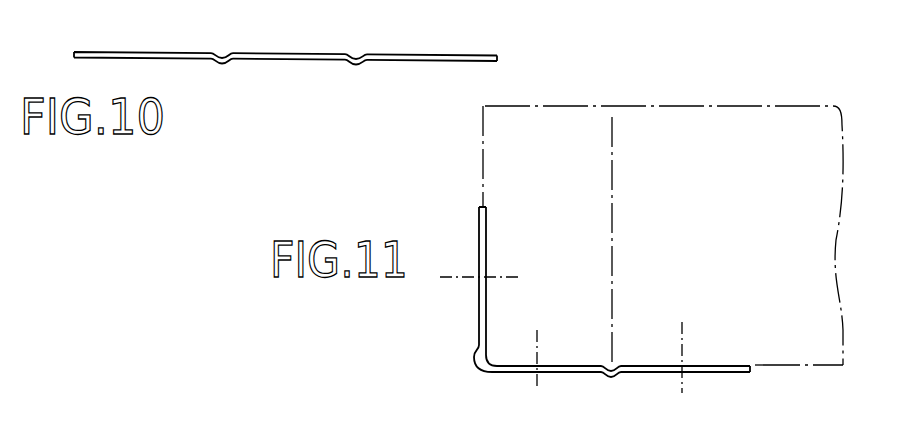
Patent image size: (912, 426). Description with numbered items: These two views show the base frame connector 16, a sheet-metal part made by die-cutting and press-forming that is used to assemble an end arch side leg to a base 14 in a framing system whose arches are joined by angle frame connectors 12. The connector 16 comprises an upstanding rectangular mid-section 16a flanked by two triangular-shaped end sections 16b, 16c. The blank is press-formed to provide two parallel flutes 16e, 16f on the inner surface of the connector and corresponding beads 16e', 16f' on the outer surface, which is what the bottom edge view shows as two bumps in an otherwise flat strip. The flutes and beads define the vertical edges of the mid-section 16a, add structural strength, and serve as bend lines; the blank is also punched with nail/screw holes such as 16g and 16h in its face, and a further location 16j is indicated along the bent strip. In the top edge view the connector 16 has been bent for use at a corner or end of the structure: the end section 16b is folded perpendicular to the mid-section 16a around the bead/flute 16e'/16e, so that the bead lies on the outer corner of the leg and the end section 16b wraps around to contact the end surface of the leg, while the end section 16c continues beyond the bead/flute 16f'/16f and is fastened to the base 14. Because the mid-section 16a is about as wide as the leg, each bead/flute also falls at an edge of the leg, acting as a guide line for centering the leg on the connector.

In FIG. 11, the angle frame connector 12 is at (552, 115).
In FIG. 11, the base 14 is at (752, 106).
In FIG. 10, the base frame connector 16 is at (304, 69).
In FIG. 11, the base frame connector 16 is at (447, 238).
In FIG. 10, the mid-section 16a is at (297, 53).
In FIG. 11, the mid-section 16a is at (489, 372).
In FIG. 10, the end section 16b is at (128, 52).
In FIG. 11, the end section 16b is at (478, 225).
In FIG. 10, the end section 16c is at (473, 56).
In FIG. 11, the end section 16c is at (741, 373).
In FIG. 10, the flute 16e is at (231, 35).
In FIG. 11, the flute 16e is at (508, 336).
In FIG. 10, the bead 16e' is at (235, 82).
In FIG. 11, the bead 16e' is at (449, 356).
In FIG. 10, the flute 16f is at (375, 36).
In FIG. 11, the flute 16f is at (627, 339).
In FIG. 10, the bead 16f' is at (373, 83).
In FIG. 11, the bead 16f' is at (581, 382).
In FIG. 11, the nail/screw hole 16g is at (485, 277).
In FIG. 11, the nail/screw hole 16h is at (540, 364).
In FIG. 11, the fold line 16j is at (683, 364).